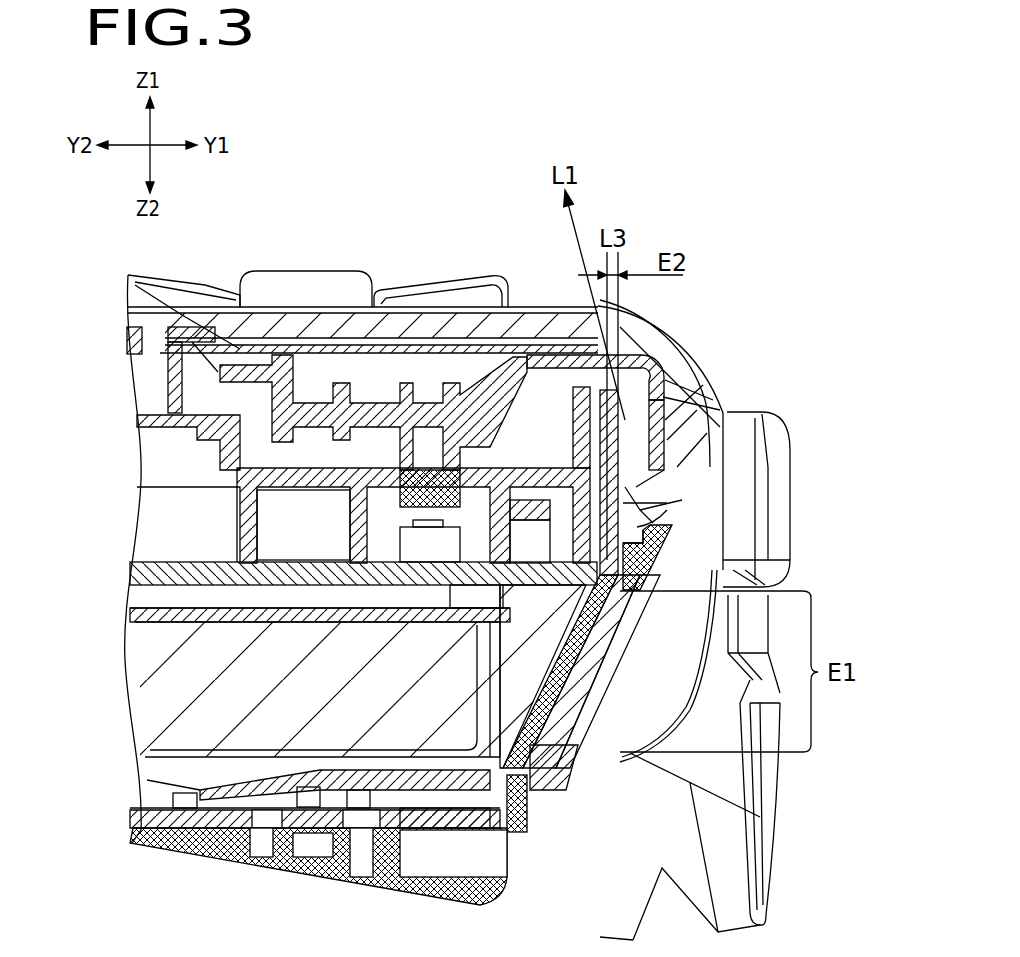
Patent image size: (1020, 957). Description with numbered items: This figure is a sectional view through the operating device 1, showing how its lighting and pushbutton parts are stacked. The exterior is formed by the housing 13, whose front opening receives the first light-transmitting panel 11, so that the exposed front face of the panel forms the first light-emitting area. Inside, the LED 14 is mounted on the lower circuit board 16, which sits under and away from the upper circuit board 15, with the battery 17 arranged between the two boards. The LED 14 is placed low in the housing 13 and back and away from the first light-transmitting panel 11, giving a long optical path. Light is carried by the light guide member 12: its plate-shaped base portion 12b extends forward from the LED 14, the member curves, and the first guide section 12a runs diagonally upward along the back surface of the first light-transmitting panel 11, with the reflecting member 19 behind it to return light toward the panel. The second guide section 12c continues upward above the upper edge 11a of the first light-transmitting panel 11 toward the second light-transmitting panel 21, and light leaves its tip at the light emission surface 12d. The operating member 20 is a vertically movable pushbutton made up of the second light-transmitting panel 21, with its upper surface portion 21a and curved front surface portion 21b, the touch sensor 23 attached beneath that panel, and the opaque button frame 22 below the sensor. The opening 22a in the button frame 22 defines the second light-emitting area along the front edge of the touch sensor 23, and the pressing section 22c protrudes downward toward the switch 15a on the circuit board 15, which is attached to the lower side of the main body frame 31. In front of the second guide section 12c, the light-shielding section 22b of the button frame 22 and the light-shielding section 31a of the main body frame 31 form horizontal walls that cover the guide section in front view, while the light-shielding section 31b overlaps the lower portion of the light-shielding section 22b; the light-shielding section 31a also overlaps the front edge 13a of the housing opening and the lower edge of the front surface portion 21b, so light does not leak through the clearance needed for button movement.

The operating device 1 is at (759, 245).
The first light-transmitting panel 11 is at (590, 700).
The upper edge 11a is at (635, 575).
The light guide member 12 is at (511, 837).
The first guide section 12a is at (573, 645).
The base portion 12b is at (410, 823).
The second guide section 12c is at (666, 375).
The light emission surface 12d is at (650, 367).
The housing 13 is at (570, 760).
The front edge 13a is at (665, 518).
The LED 14 is at (186, 835).
The circuit board 15 is at (237, 577).
The switch 15a is at (407, 545).
The circuit board 16 is at (302, 857).
The battery 17 is at (167, 713).
The reflecting member 19 is at (533, 650).
The operating member 20 is at (325, 303).
The second light-transmitting panel 21 is at (398, 312).
The upper surface portion 21a is at (438, 320).
The front surface portion 21b is at (687, 423).
The button frame 22 is at (490, 417).
The opening 22a is at (612, 342).
The light-shielding section 22b is at (720, 393).
The pressing section 22c is at (465, 487).
The touch sensor 23 is at (307, 352).
The main body frame 31 is at (268, 467).
The light-shielding section 31a is at (655, 490).
The light-shielding section 31b is at (567, 425).